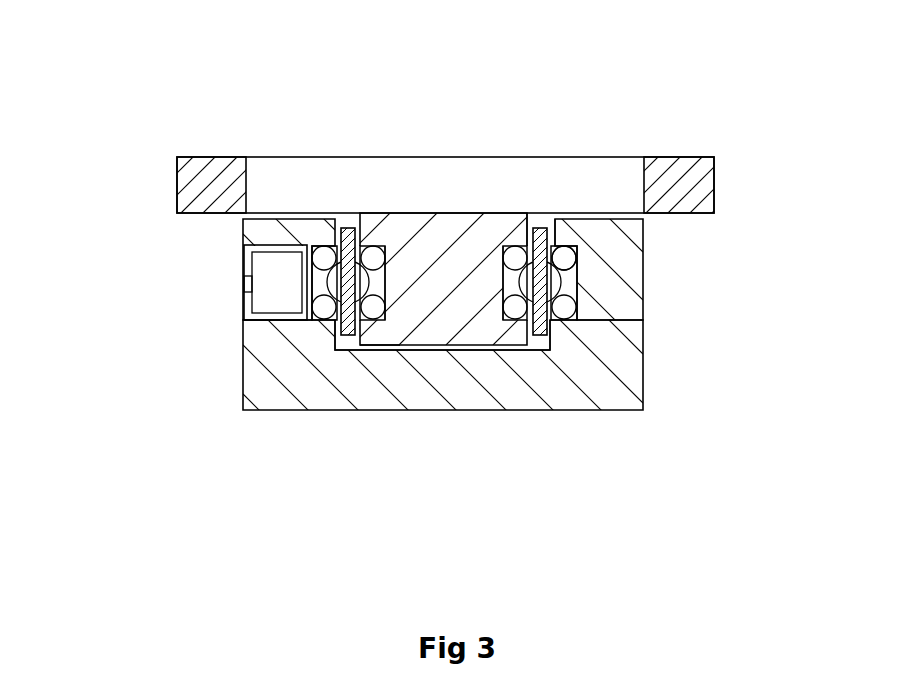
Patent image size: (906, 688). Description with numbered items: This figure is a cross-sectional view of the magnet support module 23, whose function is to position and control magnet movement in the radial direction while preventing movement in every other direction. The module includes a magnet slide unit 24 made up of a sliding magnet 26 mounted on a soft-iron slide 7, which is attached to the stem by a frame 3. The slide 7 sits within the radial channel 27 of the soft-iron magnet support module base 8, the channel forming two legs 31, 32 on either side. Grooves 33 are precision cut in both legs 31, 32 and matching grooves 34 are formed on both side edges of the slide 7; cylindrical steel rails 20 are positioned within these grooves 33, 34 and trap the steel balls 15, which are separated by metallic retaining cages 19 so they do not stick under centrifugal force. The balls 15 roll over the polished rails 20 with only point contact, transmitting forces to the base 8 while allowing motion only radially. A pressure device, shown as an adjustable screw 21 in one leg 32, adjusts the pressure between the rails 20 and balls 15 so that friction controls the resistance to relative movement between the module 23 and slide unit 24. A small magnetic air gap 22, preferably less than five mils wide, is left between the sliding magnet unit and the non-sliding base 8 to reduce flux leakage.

The frame 3 is at (437, 152).
The soft-iron slide 7 is at (425, 188).
The magnet support module base 8 is at (519, 344).
The sliding ball bearings 15 is at (682, 225).
The retaining cage 19 is at (571, 353).
The cylindrical steel rails 20 is at (573, 281).
The adjustable screw 21 is at (184, 232).
The magnetic air gap 22 is at (516, 162).
The magnet support module 23 is at (122, 312).
The magnet slide unit 24 is at (634, 98).
The sliding magnet 26 is at (445, 116).
The radial channel 27 is at (286, 410).
The leg 31 is at (681, 256).
The leg 32 is at (197, 235).
The grooves 33 is at (461, 311).
The grooves 34 is at (402, 282).